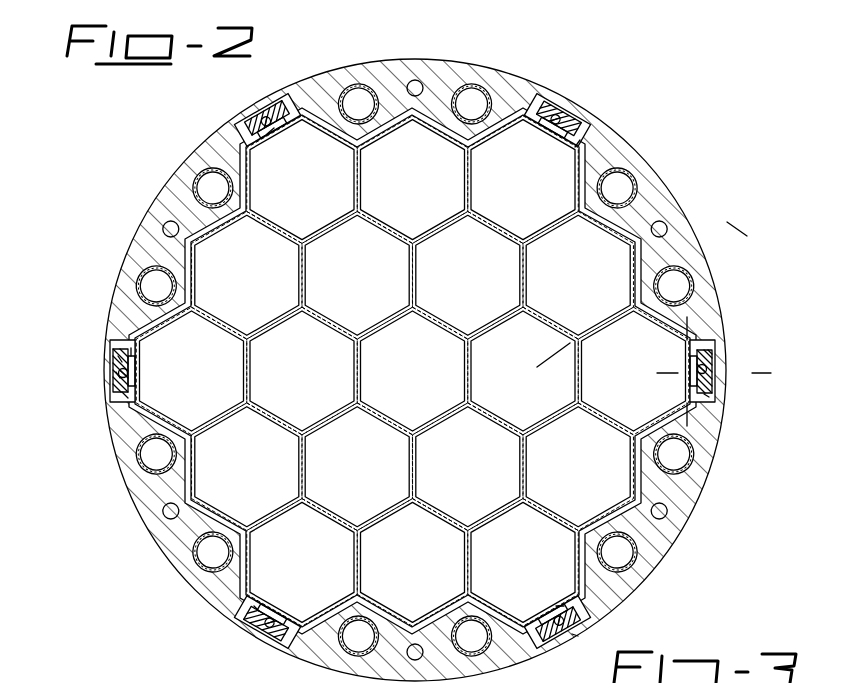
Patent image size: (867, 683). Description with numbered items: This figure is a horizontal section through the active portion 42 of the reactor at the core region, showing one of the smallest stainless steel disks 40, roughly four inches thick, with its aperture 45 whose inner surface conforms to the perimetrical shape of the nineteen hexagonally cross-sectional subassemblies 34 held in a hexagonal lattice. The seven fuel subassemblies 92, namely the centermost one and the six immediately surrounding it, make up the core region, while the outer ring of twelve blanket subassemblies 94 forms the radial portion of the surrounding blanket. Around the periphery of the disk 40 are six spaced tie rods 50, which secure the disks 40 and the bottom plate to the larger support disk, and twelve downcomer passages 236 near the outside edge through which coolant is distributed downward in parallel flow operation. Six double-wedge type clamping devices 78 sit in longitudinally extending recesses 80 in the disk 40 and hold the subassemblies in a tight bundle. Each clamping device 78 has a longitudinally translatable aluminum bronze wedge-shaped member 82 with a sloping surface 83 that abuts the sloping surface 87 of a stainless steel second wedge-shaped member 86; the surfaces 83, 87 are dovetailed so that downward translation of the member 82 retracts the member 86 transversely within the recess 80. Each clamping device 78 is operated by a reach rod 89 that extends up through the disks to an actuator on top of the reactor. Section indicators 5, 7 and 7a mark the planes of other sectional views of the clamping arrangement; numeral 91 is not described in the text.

The smallest disk 40 is at (388, 78).
The active portion 42 is at (657, 108).
The aperture 45 is at (498, 130).
The tie rod 50 is at (421, 86).
The subassembly 34 is at (587, 166).
The downcomer passage 236 is at (443, 150).
The blanket subassembly 94 is at (292, 215).
The fuel subassembly 92 is at (344, 309).
The double-wedge type clamping device 78 is at (273, 102).
The recess 80 is at (264, 112).
The bracket tab 91 is at (284, 128).
The wedge-shaped member 82 is at (708, 352).
The second wedge-shaped member 86 is at (705, 396).
The sloping surface 83 is at (125, 397).
The sloping surface 87 is at (120, 359).
The reach rod 89 is at (118, 376).
The section line 5- 5 is at (532, 343).
The section line 7- 7 is at (657, 345).
The section line 7a- 7a is at (687, 317).